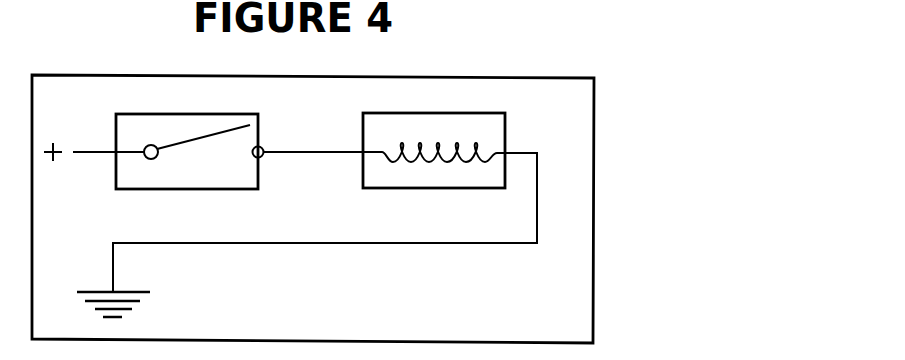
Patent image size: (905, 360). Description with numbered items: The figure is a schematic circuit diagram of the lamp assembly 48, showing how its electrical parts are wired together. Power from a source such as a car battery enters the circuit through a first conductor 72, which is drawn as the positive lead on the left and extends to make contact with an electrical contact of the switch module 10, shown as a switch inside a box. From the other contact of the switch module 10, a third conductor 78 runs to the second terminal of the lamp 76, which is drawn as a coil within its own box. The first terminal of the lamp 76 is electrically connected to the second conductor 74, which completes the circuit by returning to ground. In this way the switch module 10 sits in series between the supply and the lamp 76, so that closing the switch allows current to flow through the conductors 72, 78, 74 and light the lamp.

The lamp assembly 48 is at (562, 58).
The first conductor 72 is at (86, 154).
The switch module 10 is at (175, 189).
The third conductor 78 is at (310, 150).
The lamp 76 is at (413, 188).
The second conductor 74 is at (528, 151).